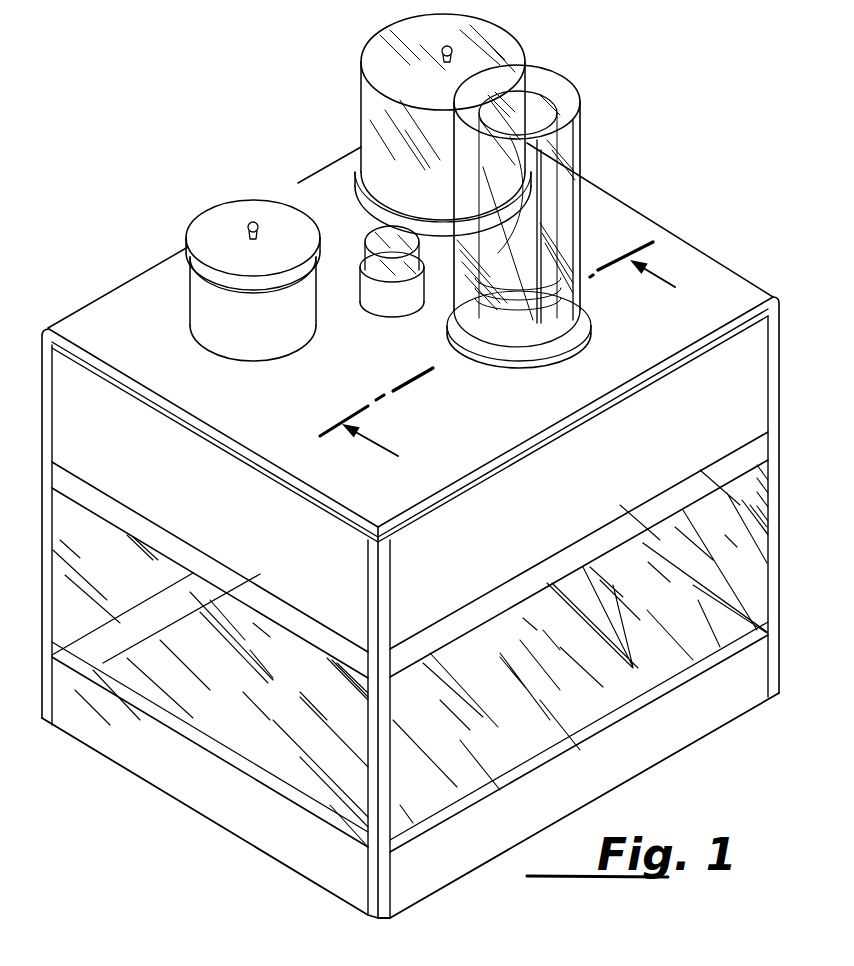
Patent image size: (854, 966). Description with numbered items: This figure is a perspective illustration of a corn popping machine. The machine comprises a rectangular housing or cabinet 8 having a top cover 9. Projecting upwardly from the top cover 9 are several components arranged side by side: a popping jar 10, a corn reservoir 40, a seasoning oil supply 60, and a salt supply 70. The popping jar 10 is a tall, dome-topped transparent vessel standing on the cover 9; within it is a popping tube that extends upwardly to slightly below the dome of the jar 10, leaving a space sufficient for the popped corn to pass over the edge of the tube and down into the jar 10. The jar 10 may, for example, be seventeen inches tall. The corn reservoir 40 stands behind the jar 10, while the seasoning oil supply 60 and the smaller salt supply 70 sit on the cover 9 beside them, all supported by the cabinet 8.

The housing or cabinet 8 is at (788, 332).
The top cover 9 is at (626, 228).
The popping jar 10 is at (594, 110).
The corn reservoir 40 is at (524, 26).
The seasoning oil supply 60 is at (223, 190).
The salt supply 70 is at (376, 310).